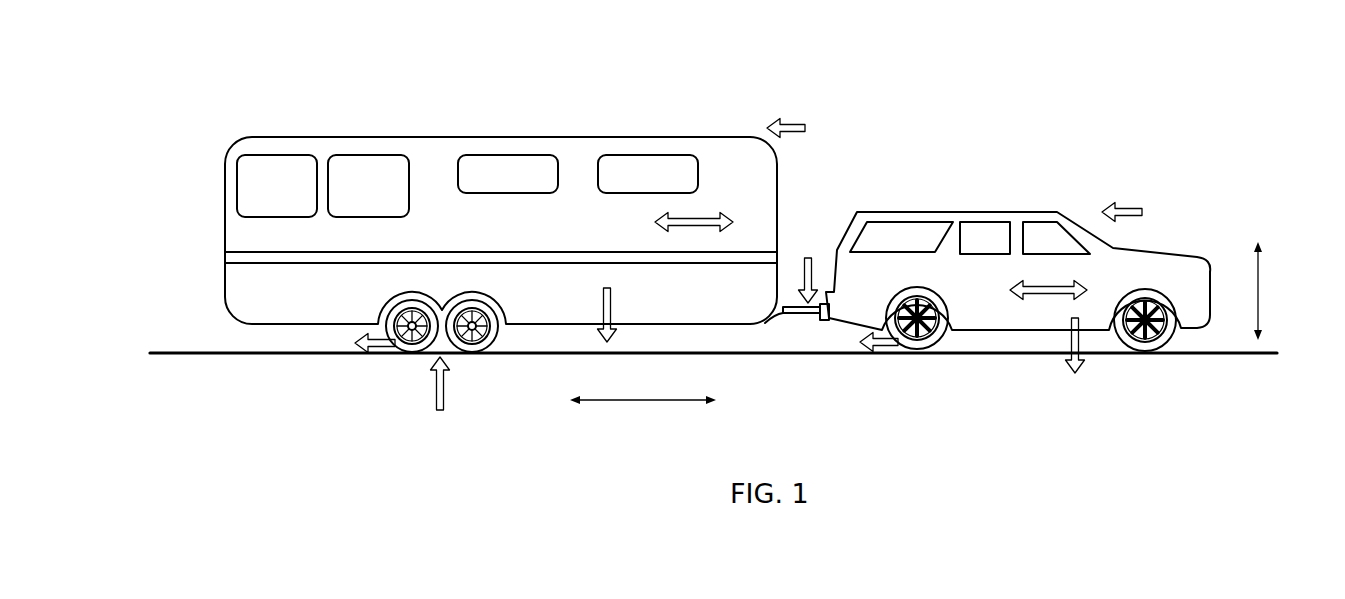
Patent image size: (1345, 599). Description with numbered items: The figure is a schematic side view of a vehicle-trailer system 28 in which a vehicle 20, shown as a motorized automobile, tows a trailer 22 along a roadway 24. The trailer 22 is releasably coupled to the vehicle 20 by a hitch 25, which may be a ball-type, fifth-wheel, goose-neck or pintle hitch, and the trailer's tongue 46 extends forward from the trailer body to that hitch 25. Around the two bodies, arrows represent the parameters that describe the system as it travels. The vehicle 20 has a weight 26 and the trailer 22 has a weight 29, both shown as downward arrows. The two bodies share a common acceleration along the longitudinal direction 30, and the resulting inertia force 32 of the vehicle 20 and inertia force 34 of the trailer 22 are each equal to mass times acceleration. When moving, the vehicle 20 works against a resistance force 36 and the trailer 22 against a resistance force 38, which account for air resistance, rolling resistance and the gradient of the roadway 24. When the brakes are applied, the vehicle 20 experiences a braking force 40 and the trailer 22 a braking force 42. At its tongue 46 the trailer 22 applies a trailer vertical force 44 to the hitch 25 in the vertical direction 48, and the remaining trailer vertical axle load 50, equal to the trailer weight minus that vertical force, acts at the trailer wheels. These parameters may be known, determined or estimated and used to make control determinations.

The vehicle 20 is at (992, 212).
The trailer 22 is at (650, 137).
The roadway 24 is at (207, 352).
The hitch 25 is at (824, 320).
The vehicle weight 26 is at (1098, 355).
The vehicle-trailer system 28 is at (875, 78).
The trailer weight 29 is at (612, 312).
The longitudinal direction 30 is at (641, 402).
The vehicle inertia force 32 is at (1047, 300).
The trailer inertia force 34 is at (693, 228).
The vehicle resistance force 36 is at (1123, 206).
The trailer resistance force 38 is at (795, 122).
The vehicle braking force 40 is at (883, 349).
The trailer braking force 42 is at (378, 350).
The trailer vertical force 44 is at (808, 258).
The tongue 46 is at (800, 313).
The vertical direction 48 is at (1262, 290).
The trailer vertical axle load 50 is at (443, 385).